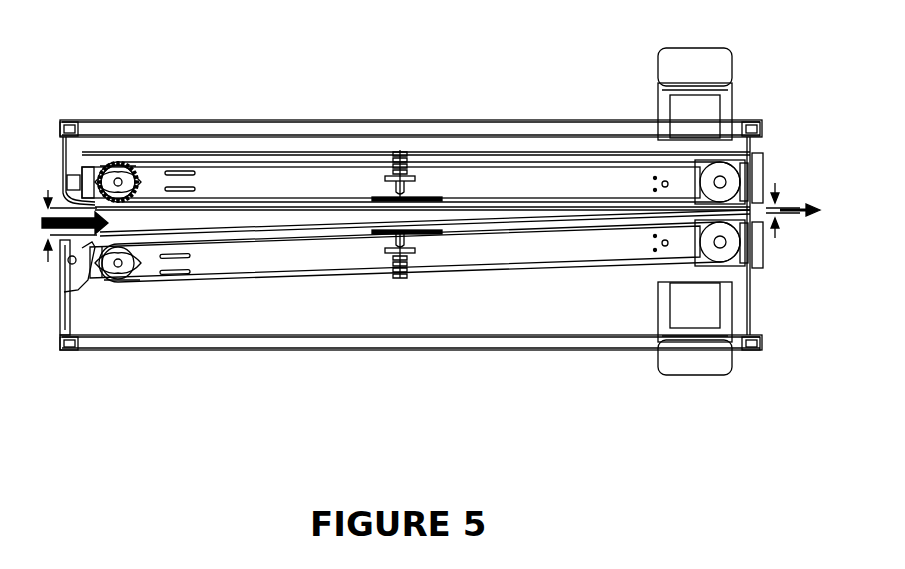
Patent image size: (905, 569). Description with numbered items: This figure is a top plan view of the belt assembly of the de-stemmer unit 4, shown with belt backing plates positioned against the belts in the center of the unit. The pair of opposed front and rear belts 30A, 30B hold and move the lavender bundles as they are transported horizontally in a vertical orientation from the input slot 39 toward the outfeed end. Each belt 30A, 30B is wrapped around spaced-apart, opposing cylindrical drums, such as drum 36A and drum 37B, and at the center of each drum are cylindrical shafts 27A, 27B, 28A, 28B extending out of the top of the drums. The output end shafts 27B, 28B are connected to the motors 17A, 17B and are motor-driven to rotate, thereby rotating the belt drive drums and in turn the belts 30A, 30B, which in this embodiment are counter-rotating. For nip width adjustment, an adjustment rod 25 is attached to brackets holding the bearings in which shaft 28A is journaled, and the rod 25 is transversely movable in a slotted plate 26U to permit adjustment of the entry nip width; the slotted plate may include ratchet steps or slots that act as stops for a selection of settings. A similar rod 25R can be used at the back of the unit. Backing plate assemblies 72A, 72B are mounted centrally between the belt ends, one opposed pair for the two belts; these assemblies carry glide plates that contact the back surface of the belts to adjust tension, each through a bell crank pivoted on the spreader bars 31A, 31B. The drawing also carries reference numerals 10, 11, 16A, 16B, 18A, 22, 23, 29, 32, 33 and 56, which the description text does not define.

The de-stemmer unit 4 is at (122, 456).
The fastener 10 is at (68, 124).
The frame 11 is at (556, 130).
The lower end plate 16A is at (764, 262).
The upper end plate 16B is at (764, 175).
The motor 17A is at (690, 358).
The motor 17B is at (690, 72).
The shaft 18A is at (150, 168).
The bracket 22 is at (60, 131).
The lower bracket 23 is at (48, 318).
The adjustment rod 25 is at (68, 262).
The rear adjustment rod 25R is at (66, 180).
The upper slotted plate 26U is at (62, 292).
The cylindrical shaft 27A is at (120, 178).
The cylindrical shaft 27B is at (722, 182).
The cylindrical shaft 28A is at (116, 268).
The cylindrical shaft 28B is at (722, 243).
The corner member 29 is at (764, 314).
The front belt 30A is at (206, 282).
The rear belt 30B is at (234, 152).
The spreader bar 31A is at (236, 270).
The spreader bar 31B is at (292, 165).
The downward adjustment direction 32 is at (46, 190).
The gap 33 is at (775, 184).
The cylindrical drum 36A is at (110, 160).
The cylindrical drum 37B is at (124, 274).
The input slot 39 is at (40, 224).
The discharge direction 56 is at (803, 211).
The backing plate assembly 72A is at (380, 152).
The backing plate assembly 72B is at (378, 259).